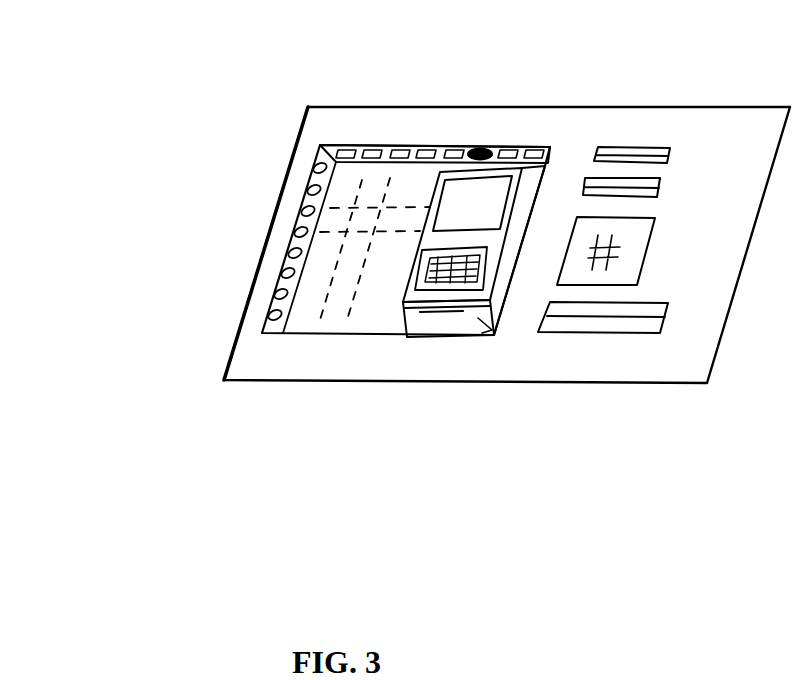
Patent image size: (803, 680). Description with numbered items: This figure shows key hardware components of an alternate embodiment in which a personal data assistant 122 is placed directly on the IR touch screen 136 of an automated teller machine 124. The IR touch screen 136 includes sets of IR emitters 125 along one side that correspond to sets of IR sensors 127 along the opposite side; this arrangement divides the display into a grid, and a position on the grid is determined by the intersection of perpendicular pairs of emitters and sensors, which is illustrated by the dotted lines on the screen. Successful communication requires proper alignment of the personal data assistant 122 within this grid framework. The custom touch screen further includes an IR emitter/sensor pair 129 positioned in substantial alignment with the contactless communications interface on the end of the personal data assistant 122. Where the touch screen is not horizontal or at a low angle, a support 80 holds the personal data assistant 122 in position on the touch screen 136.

The support 80 is at (443, 328).
The personal data assistant 122 is at (525, 210).
The automated teller machine 124 is at (150, 144).
The IR emitters 125 is at (305, 206).
The IR sensors 127 is at (437, 148).
The IR emitter/sensor pair 129 is at (474, 150).
The IR touch screen 136 is at (316, 298).